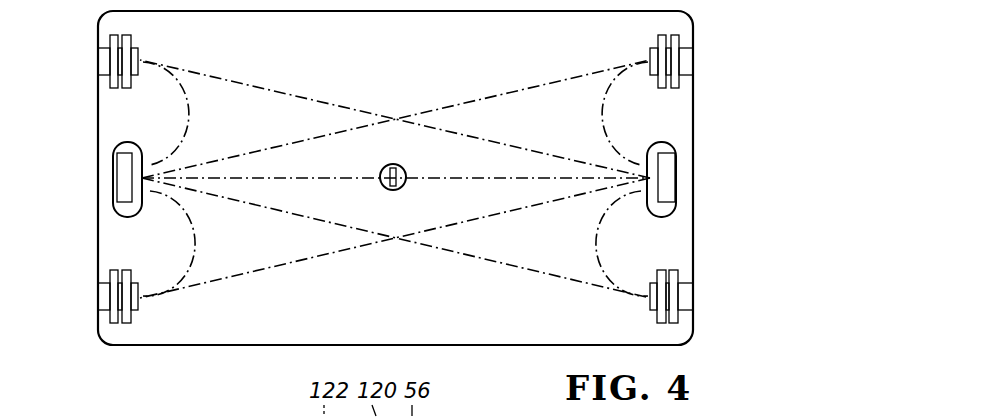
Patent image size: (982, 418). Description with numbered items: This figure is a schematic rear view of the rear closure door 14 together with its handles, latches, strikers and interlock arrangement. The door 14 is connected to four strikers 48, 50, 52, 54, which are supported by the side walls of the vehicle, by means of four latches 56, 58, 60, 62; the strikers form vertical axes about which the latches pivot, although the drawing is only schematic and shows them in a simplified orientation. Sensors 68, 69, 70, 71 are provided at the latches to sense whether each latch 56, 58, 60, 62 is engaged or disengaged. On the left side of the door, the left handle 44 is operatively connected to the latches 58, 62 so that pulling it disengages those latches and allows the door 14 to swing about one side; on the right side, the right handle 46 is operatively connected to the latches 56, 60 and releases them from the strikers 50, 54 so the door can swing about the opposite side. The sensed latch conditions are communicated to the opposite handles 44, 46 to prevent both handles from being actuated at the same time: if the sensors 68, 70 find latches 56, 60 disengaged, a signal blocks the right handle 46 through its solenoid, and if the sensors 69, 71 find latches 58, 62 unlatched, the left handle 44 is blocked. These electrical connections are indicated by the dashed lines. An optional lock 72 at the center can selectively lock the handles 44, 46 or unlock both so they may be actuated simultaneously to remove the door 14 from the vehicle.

The door 14 is at (160, 346).
The left handle 44 is at (124, 178).
The right handle 46 is at (669, 178).
The striker 48 is at (678, 62).
The striker 50 is at (117, 63).
The striker 52 is at (678, 303).
The striker 54 is at (118, 295).
The latch 56 is at (653, 60).
The latch 58 is at (138, 40).
The latch 60 is at (657, 320).
The latch 62 is at (134, 320).
The sensor 68 is at (680, 47).
The sensor 69 is at (104, 77).
The sensor 70 is at (682, 285).
The sensor 71 is at (104, 310).
The lock 72 is at (398, 190).